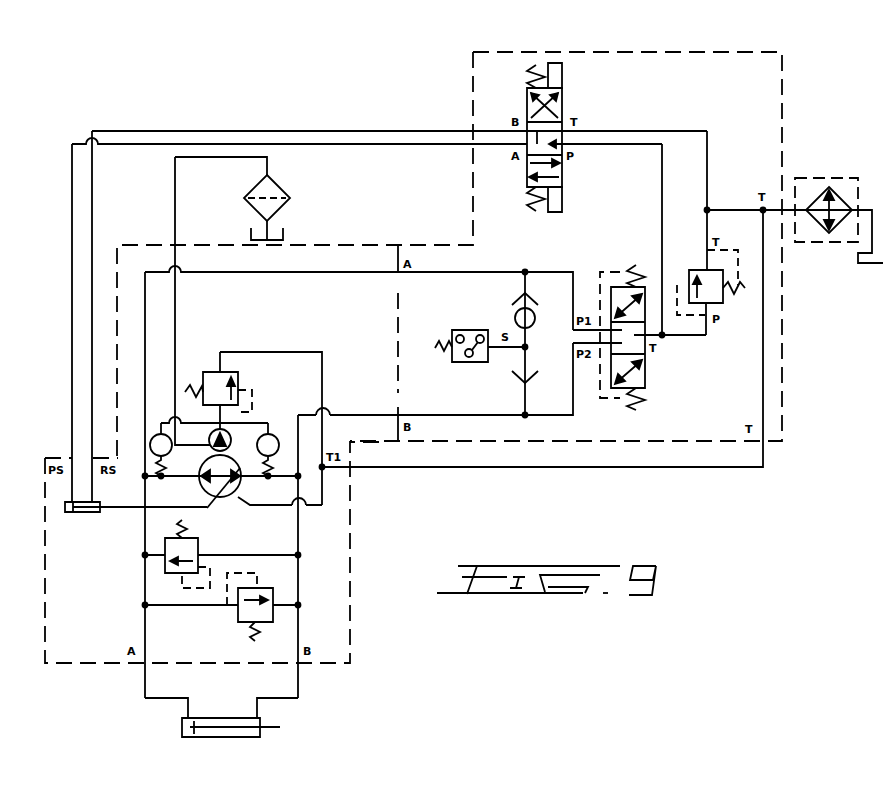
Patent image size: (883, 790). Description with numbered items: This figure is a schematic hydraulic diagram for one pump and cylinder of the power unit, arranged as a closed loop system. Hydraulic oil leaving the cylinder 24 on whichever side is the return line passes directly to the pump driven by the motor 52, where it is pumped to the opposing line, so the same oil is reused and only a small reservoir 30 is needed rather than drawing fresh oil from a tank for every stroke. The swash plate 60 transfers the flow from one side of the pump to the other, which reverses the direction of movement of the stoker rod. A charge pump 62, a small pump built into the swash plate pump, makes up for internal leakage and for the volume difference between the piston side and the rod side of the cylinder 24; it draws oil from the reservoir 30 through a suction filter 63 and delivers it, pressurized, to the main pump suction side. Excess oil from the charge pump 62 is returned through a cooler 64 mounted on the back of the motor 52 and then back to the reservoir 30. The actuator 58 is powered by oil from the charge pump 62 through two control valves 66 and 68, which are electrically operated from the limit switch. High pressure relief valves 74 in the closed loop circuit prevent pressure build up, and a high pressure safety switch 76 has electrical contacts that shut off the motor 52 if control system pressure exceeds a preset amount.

The cylinder 24 is at (238, 738).
The reservoir 30 is at (282, 240).
The motor 52 is at (238, 488).
The actuator 58 is at (91, 514).
The swash plate 60 is at (213, 506).
The charge pump 62 is at (238, 432).
The suction filter 63 is at (278, 187).
The cooler 64 is at (814, 191).
The control valve 66 is at (639, 381).
The control valve 68 is at (563, 178).
The high pressure relief valve 74 is at (165, 565).
The high pressure safety switch 76 is at (480, 357).